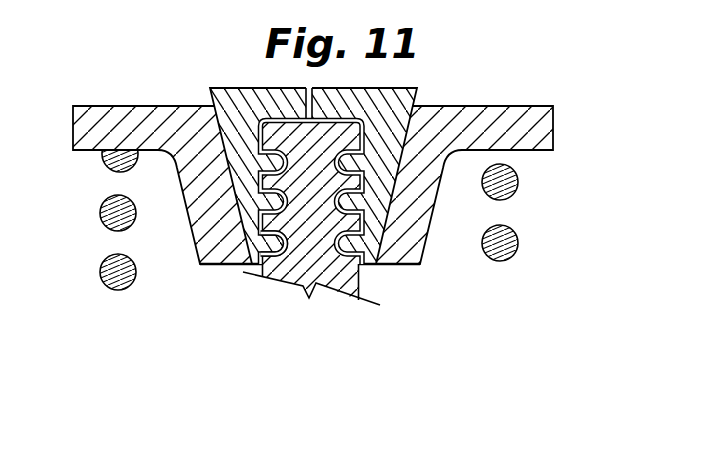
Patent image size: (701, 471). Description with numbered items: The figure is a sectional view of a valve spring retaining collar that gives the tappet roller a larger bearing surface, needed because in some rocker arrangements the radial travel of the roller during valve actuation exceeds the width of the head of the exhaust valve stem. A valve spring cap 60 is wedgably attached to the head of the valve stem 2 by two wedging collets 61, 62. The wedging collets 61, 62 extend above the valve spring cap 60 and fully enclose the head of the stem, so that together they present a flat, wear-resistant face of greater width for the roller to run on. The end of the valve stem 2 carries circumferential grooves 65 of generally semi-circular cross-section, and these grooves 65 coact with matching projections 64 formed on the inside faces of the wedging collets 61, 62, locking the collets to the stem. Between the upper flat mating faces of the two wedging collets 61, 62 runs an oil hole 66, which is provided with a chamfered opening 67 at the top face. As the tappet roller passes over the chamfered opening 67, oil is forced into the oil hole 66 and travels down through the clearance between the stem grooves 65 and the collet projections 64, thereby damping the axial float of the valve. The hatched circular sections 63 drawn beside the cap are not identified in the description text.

The liner 2 is at (375, 280).
The flange body 60 is at (527, 100).
The right insert 61 is at (417, 90).
The left insert 62 is at (208, 88).
The fasteners 63 is at (532, 193).
The interlocking rib 64 is at (258, 247).
The junction line 65 is at (258, 275).
The gap between inserts 66 is at (303, 82).
The insert edge at gap 67 is at (322, 80).